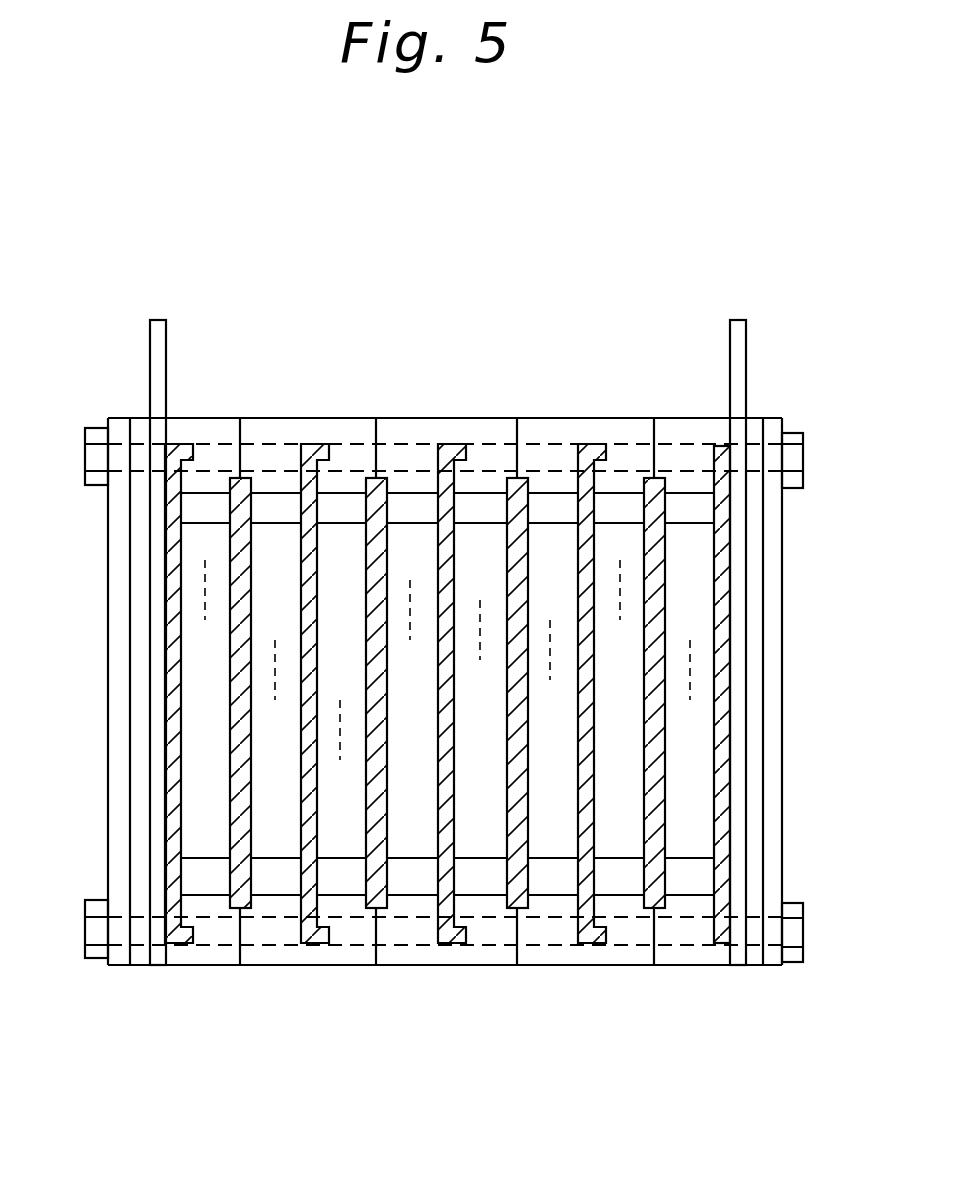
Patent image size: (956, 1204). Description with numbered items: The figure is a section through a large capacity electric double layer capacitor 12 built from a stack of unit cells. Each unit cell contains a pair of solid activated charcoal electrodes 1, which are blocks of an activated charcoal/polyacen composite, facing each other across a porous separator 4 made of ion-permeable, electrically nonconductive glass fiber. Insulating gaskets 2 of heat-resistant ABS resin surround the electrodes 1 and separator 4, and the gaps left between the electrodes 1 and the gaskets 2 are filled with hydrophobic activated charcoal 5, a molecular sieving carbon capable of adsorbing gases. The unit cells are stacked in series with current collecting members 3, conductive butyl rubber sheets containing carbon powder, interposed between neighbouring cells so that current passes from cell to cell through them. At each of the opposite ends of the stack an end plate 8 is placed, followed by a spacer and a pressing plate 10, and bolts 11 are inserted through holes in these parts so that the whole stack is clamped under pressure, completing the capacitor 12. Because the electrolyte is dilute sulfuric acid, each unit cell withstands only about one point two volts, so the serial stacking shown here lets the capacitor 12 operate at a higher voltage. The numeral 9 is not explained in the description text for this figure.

The solid activated charcoal electrode 1 is at (397, 803).
The gasket 2 is at (188, 426).
The current collecting member 3 is at (723, 695).
The porous separator 4 is at (367, 673).
The hydrophobic activated charcoal 5 is at (268, 503).
The end plate 8 is at (156, 318).
The end plate 9 is at (137, 537).
The pressing plate 10 is at (118, 613).
The bolt 11 is at (95, 446).
The electric double layer capacitor 12 is at (686, 203).